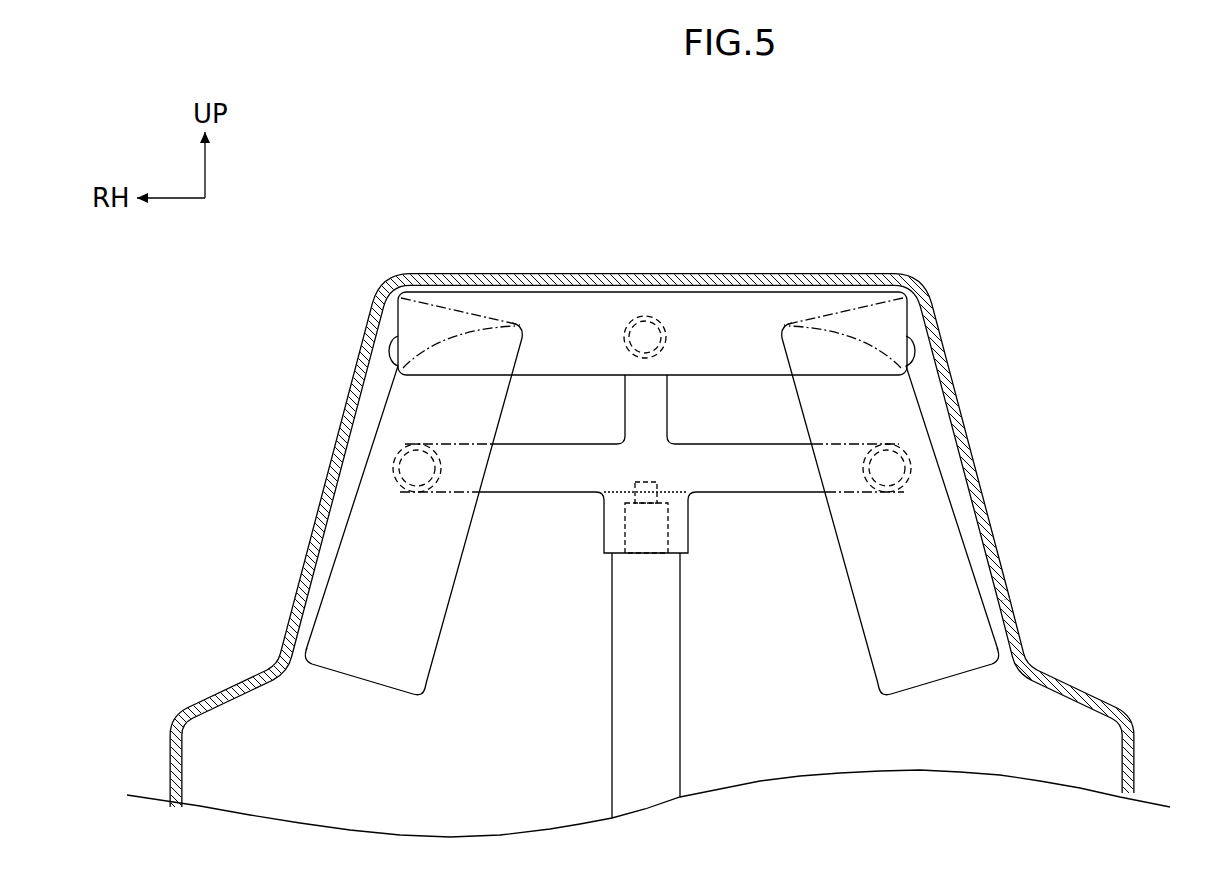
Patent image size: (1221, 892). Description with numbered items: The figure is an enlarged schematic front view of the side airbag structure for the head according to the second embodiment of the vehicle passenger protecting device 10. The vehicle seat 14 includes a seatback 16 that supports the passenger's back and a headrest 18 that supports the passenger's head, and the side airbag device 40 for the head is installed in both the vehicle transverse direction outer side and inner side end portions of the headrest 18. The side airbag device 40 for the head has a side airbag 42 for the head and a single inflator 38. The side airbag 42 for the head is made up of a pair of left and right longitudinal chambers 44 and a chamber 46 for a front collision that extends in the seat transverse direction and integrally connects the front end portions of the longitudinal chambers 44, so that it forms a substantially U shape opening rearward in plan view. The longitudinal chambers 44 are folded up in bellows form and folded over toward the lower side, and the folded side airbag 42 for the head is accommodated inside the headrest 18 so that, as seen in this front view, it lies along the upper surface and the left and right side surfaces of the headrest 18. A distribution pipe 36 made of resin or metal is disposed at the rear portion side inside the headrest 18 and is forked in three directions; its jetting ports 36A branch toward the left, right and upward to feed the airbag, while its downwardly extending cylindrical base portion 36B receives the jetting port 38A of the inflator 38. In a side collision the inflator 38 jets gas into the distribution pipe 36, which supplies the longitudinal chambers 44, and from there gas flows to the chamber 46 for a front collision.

The vehicle passenger protecting device 10 is at (696, 484).
The vehicle seat 14 is at (962, 361).
The seatback 16 is at (1137, 758).
The headrest 18 is at (917, 283).
The distribution pipe 36 is at (600, 496).
The jetting ports 36A is at (640, 315).
The base portion 36B is at (690, 540).
The inflator 38 is at (676, 722).
The jetting port 38A is at (647, 480).
The side airbag device for the head 40 is at (863, 673).
The side airbag for the head 42 is at (371, 688).
The longitudinal chambers 44 is at (337, 590).
The chamber for a front collision 46 is at (747, 312).